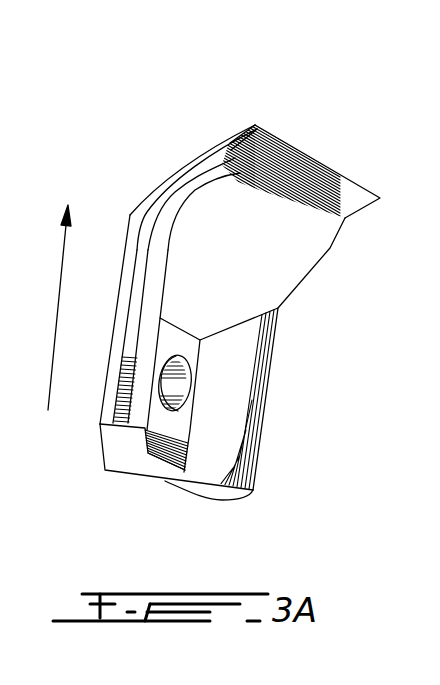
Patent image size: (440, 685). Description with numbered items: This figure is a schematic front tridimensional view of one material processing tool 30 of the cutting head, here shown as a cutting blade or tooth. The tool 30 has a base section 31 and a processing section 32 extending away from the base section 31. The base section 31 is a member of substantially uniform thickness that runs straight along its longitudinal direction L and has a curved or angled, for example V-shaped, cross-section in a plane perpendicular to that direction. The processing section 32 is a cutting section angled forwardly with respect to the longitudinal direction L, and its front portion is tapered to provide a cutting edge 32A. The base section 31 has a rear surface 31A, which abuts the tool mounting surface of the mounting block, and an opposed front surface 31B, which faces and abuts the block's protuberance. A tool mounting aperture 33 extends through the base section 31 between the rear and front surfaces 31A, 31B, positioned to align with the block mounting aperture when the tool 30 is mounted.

The material processing tool 30 is at (250, 77).
The base section 31 is at (107, 378).
The rear surface 31A is at (112, 470).
The front surface 31B is at (248, 348).
The processing section 32 is at (190, 188).
The cutting edge 32A is at (344, 174).
The tool mounting aperture 33 is at (178, 411).
The longitudinal direction L is at (58, 300).